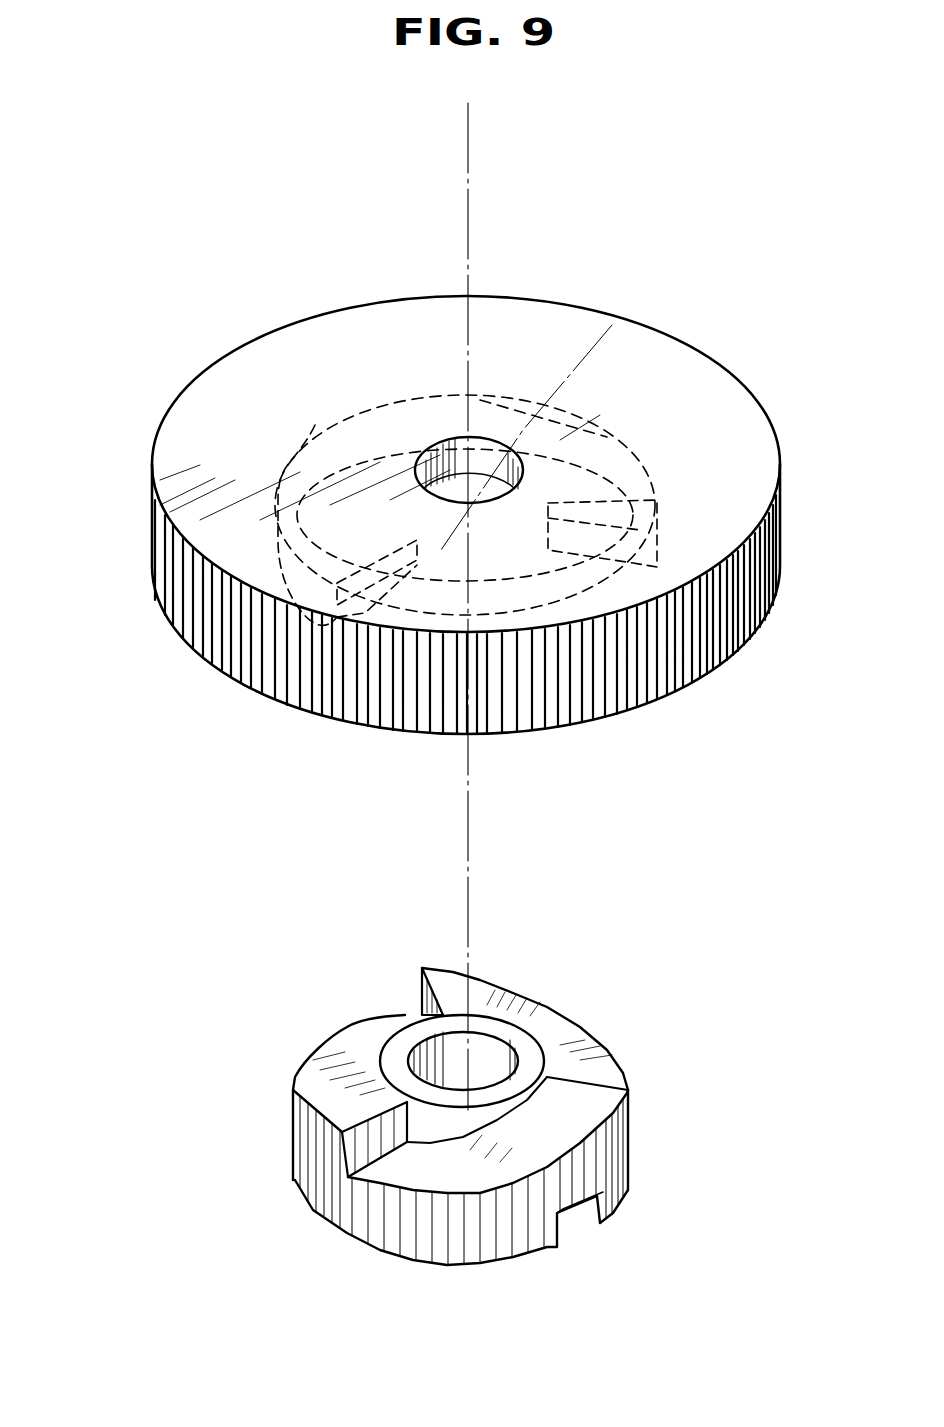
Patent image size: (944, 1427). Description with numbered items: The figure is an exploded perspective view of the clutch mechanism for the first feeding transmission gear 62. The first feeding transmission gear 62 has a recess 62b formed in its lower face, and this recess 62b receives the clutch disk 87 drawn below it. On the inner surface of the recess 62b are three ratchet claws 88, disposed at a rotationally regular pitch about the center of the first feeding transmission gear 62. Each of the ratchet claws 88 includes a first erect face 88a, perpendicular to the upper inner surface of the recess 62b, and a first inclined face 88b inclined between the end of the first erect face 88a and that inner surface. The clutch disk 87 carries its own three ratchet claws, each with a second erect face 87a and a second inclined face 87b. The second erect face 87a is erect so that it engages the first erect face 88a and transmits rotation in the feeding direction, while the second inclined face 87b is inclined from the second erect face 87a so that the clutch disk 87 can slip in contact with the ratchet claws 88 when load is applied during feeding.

The first feeding transmission gear 62 is at (612, 306).
The recess 62b is at (283, 470).
The ratchet claws 88 is at (388, 433).
The first erect face 88a is at (475, 398).
The first inclined face 88b is at (357, 420).
The clutch disk 87 is at (636, 1165).
The second erect face 87a is at (427, 1000).
The second inclined face 87b is at (565, 1010).